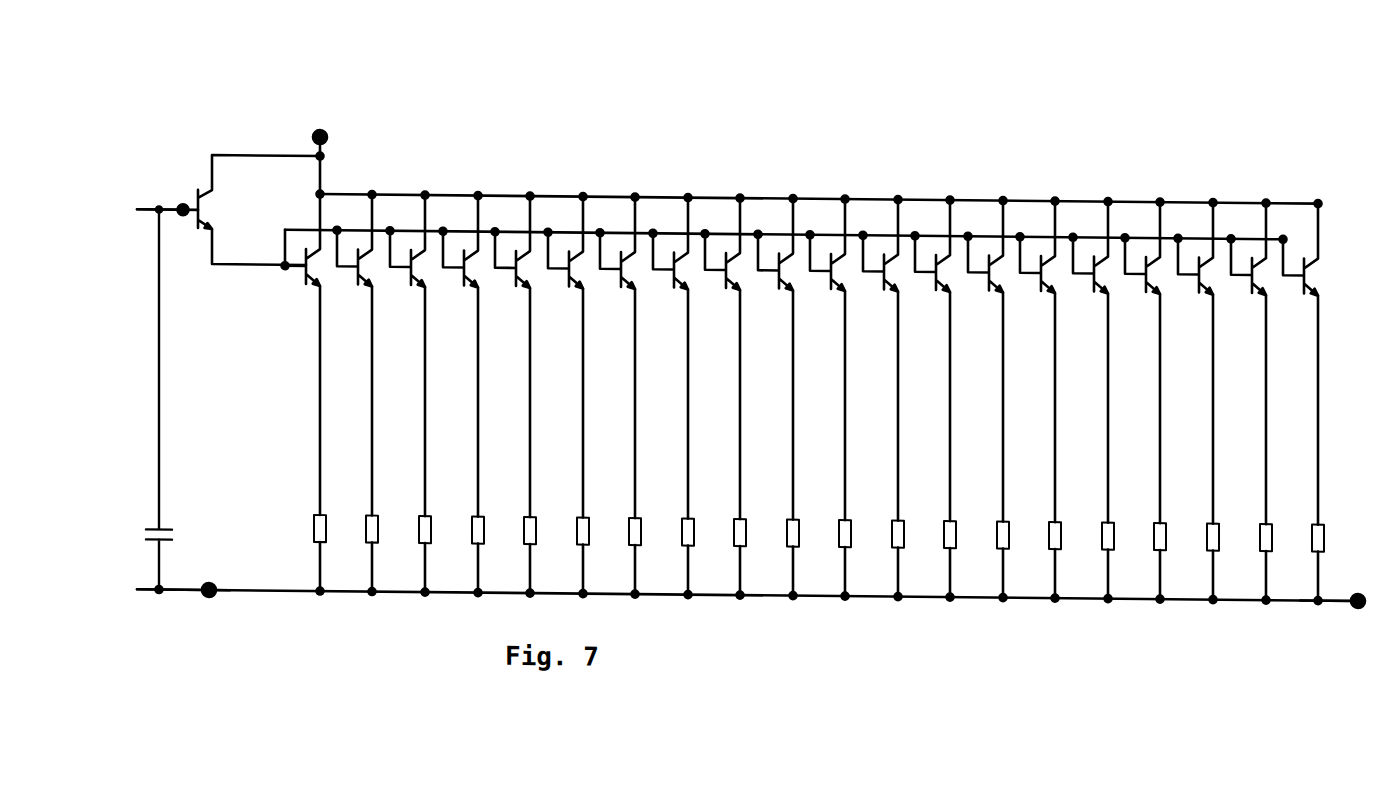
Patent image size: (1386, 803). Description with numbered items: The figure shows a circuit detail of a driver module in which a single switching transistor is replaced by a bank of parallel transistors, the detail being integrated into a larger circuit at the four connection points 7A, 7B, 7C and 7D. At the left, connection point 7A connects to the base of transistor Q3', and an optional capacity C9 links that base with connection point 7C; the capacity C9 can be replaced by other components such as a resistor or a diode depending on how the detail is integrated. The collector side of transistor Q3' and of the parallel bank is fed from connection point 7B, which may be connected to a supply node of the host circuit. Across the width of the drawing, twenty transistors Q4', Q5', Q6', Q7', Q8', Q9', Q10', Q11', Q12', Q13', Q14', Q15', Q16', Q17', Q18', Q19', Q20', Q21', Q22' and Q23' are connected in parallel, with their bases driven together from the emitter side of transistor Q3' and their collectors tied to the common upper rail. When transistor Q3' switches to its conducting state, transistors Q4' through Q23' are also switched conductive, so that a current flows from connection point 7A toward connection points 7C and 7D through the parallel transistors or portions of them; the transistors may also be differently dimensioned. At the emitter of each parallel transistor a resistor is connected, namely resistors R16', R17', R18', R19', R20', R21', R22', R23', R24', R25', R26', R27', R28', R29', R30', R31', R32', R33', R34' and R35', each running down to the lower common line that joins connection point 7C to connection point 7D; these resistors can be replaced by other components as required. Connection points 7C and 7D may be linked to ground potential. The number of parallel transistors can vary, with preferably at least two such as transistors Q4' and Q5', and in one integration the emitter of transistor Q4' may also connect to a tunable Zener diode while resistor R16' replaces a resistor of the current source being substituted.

The connection point 7A is at (176, 210).
The connection point 7B is at (327, 128).
The connection point 7C is at (198, 595).
The connection point 7D is at (1357, 605).
The transistor Q3' is at (259, 210).
The capacity C9 is at (169, 399).
The transistor Q4' is at (314, 355).
The transistor Q5' is at (364, 353).
The transistor Q6' is at (417, 353).
The transistor Q7' is at (470, 354).
The transistor Q8' is at (522, 354).
The transistor Q9' is at (575, 355).
The transistor Q10' is at (631, 355).
The transistor Q11' is at (684, 356).
The transistor Q12' is at (736, 356).
The transistor Q13' is at (789, 357).
The transistor Q14' is at (841, 357).
The transistor Q15' is at (894, 358).
The transistor Q16' is at (946, 358).
The transistor Q17' is at (999, 359).
The transistor Q18' is at (1051, 359).
The transistor Q19' is at (1104, 360).
The transistor Q20' is at (1156, 360).
The transistor Q21' is at (1209, 361).
The transistor Q22' is at (1262, 361).
The transistor Q23' is at (1314, 362).
The resistor R16' is at (335, 555).
The resistor R17' is at (387, 556).
The resistor R18' is at (440, 556).
The resistor R19' is at (493, 557).
The resistor R20' is at (545, 557).
The resistor R21' is at (598, 558).
The resistor R22' is at (650, 558).
The resistor R23' is at (703, 559).
The resistor R24' is at (755, 559).
The resistor R25' is at (808, 560).
The resistor R26' is at (860, 560).
The resistor R27' is at (913, 561).
The resistor R28' is at (965, 561).
The resistor R29' is at (1018, 562).
The resistor R30' is at (1070, 562).
The resistor R31' is at (1123, 563).
The resistor R32' is at (1175, 563).
The resistor R33' is at (1228, 564).
The resistor R34' is at (1281, 564).
The resistor R35' is at (1333, 565).